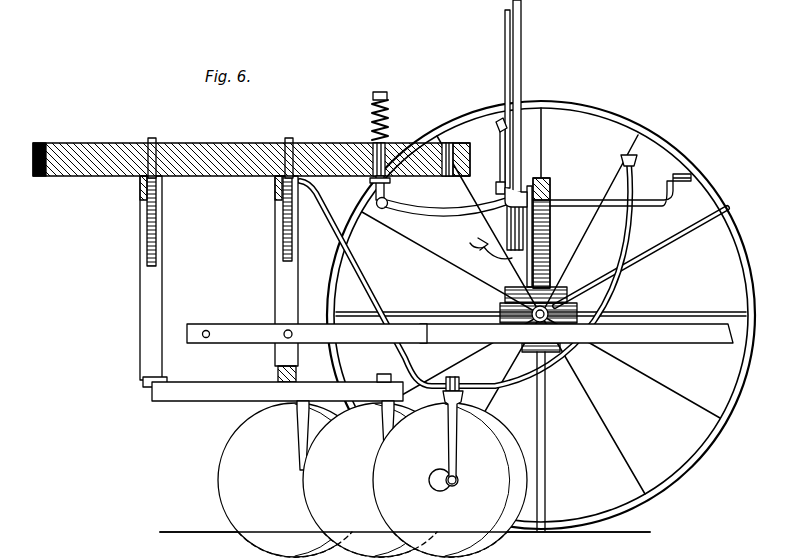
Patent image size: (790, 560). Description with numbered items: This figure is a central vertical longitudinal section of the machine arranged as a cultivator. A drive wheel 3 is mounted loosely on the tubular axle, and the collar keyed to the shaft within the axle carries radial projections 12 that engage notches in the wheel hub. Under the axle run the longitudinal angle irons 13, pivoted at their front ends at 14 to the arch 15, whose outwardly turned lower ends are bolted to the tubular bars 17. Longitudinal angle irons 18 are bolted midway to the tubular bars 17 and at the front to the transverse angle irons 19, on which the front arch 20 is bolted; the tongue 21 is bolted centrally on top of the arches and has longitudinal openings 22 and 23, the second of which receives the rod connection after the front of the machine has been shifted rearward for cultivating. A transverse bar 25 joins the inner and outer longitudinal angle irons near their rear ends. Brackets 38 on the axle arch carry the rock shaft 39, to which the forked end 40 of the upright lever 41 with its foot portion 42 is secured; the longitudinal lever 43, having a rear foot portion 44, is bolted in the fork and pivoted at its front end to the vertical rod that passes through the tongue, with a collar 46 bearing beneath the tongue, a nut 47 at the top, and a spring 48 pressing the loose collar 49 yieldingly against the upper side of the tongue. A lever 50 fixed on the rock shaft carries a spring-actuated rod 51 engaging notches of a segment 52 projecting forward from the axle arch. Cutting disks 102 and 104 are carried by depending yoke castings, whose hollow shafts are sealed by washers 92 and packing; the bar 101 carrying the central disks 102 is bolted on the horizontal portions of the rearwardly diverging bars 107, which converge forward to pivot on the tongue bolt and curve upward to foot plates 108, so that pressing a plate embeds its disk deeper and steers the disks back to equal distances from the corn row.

The wheel 3 is at (546, 315).
The radial projections 12 is at (551, 192).
The angle irons 13 is at (576, 333).
The pivot 14 is at (292, 330).
The arch 15 is at (273, 252).
The tubular bars 17 is at (296, 374).
The angle irons 18 is at (277, 391).
The transverse angle irons 19 is at (147, 388).
The arch 20 is at (135, 259).
The tongue 21 is at (251, 150).
The slot 22 is at (452, 143).
The slot 23 is at (431, 150).
The transverse bar 25 is at (391, 368).
The brackets 38 is at (496, 186).
The rock shaft 39 is at (505, 199).
The forked end 40 is at (551, 228).
The lever 41 is at (500, 162).
The foot portion 42 is at (499, 122).
The lever 43 is at (440, 216).
The foot portion 44 is at (671, 180).
The collar 46 is at (367, 183).
The nut 47 is at (385, 93).
The spring 48 is at (371, 118).
The collar 49 is at (372, 143).
The lever 50 is at (521, 40).
The spring-actuated rod 51 is at (505, 45).
The segment 52 is at (470, 243).
The washer 92 is at (458, 484).
The transverse bar 101 is at (459, 378).
The cutting disk 102 is at (450, 480).
The cutting disks 104 is at (337, 479).
The rearwardly diverging bars 107 is at (477, 274).
The foot plates 108 is at (637, 160).